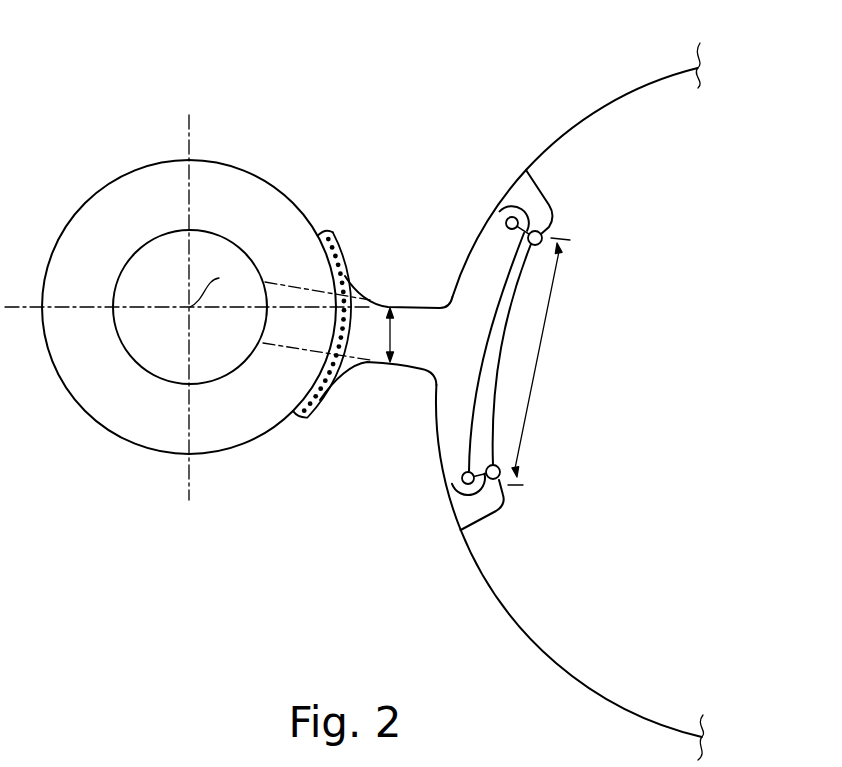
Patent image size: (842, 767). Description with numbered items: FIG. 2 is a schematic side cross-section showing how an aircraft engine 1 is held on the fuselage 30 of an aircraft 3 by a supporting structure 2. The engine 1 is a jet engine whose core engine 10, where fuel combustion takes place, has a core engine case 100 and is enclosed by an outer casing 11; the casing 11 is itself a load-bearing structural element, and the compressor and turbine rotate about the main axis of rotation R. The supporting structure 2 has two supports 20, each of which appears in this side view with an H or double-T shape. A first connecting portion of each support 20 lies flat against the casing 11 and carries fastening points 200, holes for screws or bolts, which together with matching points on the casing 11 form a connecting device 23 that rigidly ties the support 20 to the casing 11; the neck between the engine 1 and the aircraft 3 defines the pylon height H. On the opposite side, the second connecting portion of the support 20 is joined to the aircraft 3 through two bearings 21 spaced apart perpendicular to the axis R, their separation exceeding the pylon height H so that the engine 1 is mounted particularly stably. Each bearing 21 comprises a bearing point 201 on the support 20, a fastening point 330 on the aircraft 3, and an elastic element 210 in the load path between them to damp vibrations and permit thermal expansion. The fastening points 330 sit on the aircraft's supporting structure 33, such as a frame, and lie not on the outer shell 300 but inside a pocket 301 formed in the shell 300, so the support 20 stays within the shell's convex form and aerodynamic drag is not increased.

The aircraft engine 1 is at (115, 477).
The supporting structure 2 is at (412, 252).
The aircraft 3 is at (495, 627).
The core engine 10 is at (138, 293).
The outer casing 11 is at (100, 187).
The support 20 is at (352, 272).
The bearing 21 is at (543, 215).
The connecting device 23 is at (340, 219).
The fuselage 30 is at (630, 120).
The supporting structure of the aircraft 33 is at (520, 278).
The core engine case 100 is at (208, 230).
The fastening point 200 is at (303, 406).
The bearing point 201 is at (514, 217).
The elastic element 210 is at (500, 211).
The outer shell 300 is at (509, 190).
The pocket 301 is at (424, 513).
The fastening point of the aircraft 330 is at (558, 230).